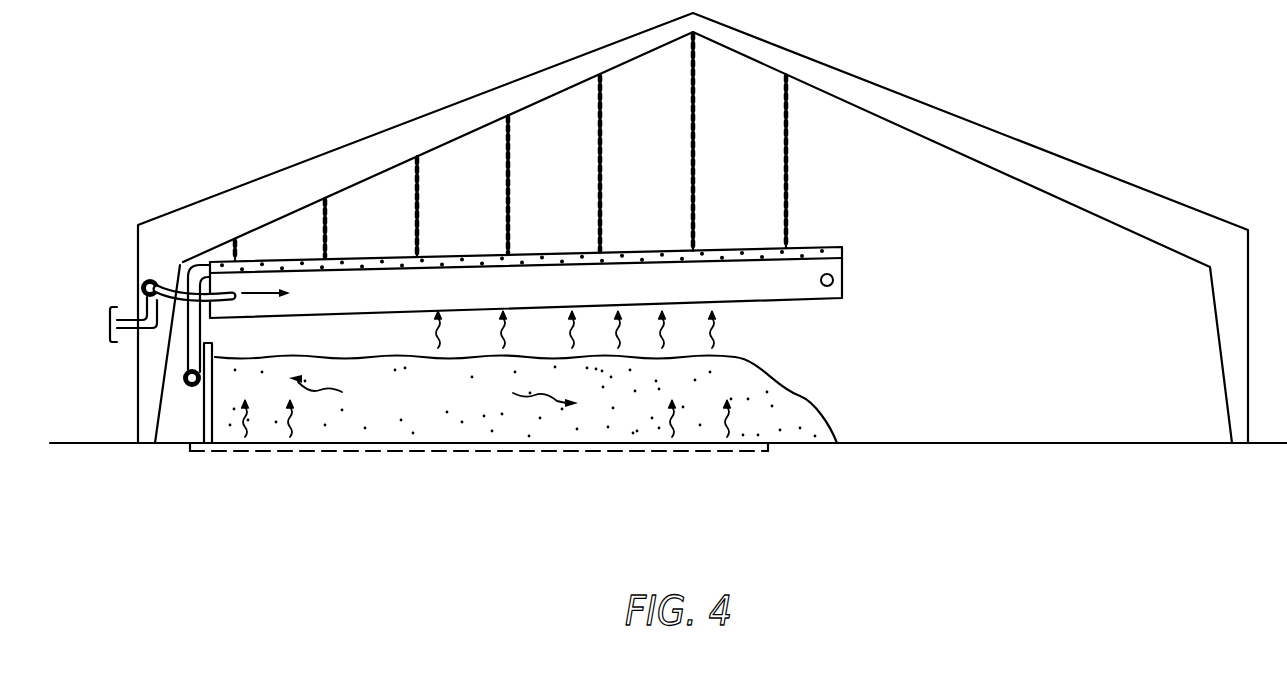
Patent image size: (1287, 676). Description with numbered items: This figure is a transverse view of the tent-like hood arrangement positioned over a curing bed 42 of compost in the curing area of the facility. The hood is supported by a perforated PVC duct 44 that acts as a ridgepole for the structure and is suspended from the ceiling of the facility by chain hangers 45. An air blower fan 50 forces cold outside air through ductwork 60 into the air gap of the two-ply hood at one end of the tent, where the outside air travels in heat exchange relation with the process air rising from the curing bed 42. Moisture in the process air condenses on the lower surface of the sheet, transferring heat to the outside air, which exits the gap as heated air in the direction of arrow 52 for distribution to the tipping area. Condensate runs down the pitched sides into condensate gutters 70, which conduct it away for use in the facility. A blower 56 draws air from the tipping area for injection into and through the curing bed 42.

The curing beds 42 is at (765, 405).
The perforated PVC ducts 44 is at (842, 247).
The chain hangers 45 is at (417, 207).
The air blower fan 50 is at (150, 272).
The arrow indicating exit of heated outside air 52 is at (833, 280).
The blower 56 is at (183, 378).
The ductwork 60 is at (180, 264).
The condensate gutters 70 is at (787, 300).